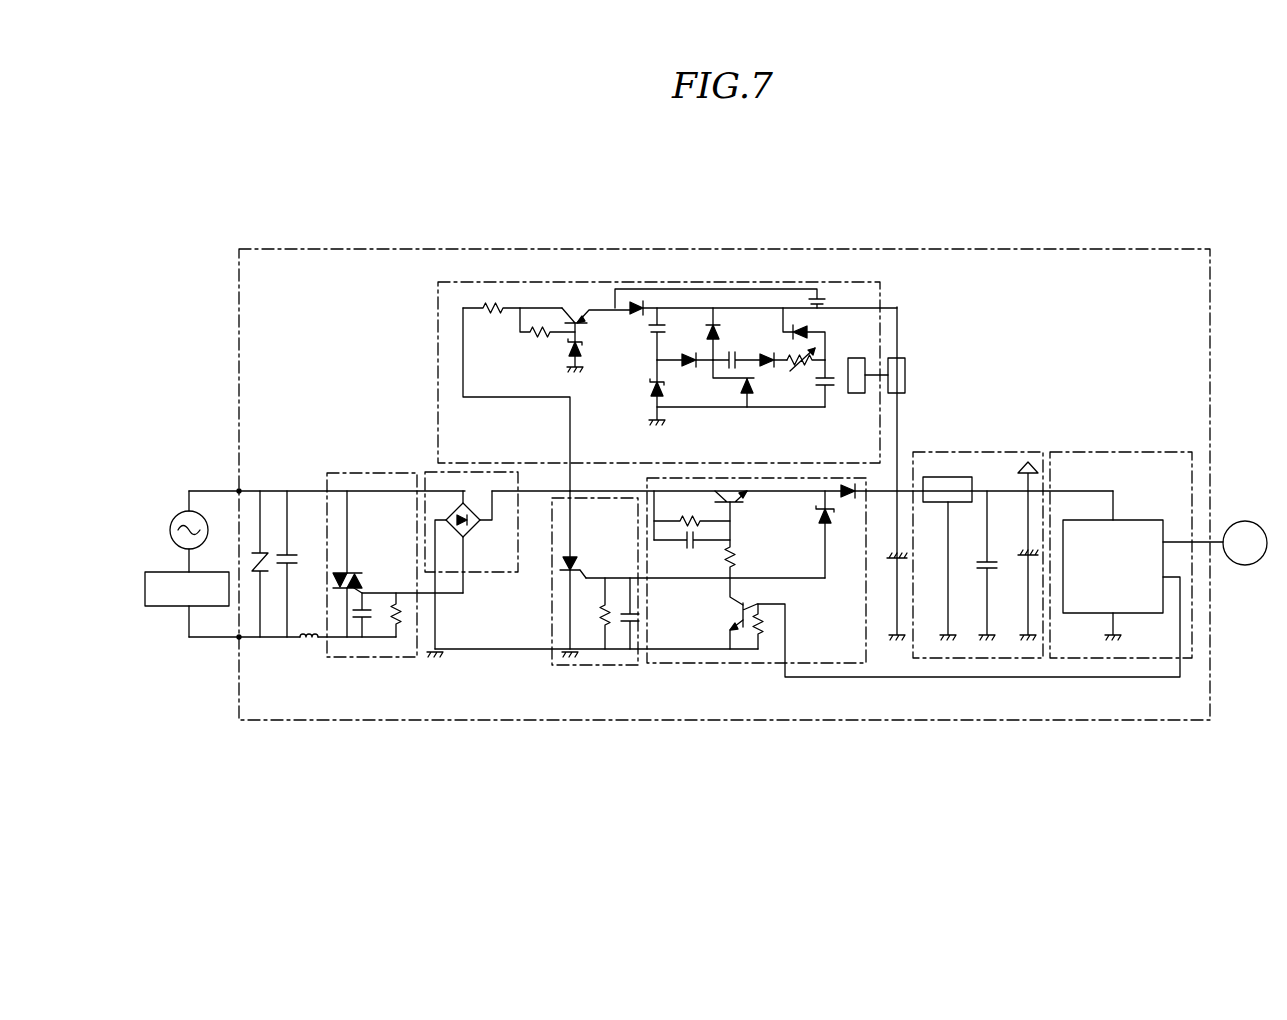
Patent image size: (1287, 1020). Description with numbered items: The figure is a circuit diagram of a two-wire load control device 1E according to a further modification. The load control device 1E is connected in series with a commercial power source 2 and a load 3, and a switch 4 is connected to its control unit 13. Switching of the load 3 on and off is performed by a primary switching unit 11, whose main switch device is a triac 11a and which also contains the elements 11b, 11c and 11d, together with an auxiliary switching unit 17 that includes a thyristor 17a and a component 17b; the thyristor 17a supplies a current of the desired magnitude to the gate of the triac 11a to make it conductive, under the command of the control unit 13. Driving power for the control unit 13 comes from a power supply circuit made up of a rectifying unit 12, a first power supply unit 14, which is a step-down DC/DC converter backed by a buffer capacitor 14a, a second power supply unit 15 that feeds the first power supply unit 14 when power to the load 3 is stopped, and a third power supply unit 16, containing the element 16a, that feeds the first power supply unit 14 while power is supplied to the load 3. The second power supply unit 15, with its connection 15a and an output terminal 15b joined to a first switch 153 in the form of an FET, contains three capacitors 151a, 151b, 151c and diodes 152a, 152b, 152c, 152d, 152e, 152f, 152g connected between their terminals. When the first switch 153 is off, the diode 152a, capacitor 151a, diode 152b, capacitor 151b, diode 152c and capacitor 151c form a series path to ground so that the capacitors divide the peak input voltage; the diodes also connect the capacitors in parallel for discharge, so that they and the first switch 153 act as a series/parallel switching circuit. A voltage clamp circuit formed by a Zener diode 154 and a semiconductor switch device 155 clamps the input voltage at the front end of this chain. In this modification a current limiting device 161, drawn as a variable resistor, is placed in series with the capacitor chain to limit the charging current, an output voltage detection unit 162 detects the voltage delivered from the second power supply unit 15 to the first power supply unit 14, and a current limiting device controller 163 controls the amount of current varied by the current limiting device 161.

The two-wire load control device 1E is at (643, 146).
The commercial power source 2 is at (175, 517).
The load 3 is at (162, 572).
The switch 4 is at (1245, 565).
The primary switching unit 11 is at (405, 472).
The triac 11a is at (338, 572).
The triac 11b is at (347, 600).
The capacitor 11c is at (366, 625).
The resistor 11d is at (398, 630).
The rectifying unit 12 is at (483, 572).
The control unit 13 is at (1150, 520).
The first power supply unit 14 is at (980, 452).
The buffer capacitor 14a is at (899, 640).
The second power supply unit 15 is at (855, 282).
The output line 15a is at (570, 490).
The output terminal 15b is at (898, 555).
The third power supply unit 16 is at (845, 663).
The zener diode 16a is at (822, 525).
The auxiliary switching unit 17 is at (578, 665).
The thyristor 17a is at (567, 572).
The capacitor 17b is at (632, 625).
The capacitor 151a is at (660, 322).
The capacitor 151b is at (728, 366).
The capacitor 151c is at (831, 384).
The diode 152a is at (635, 303).
The diode 152b is at (686, 363).
The diode 152c is at (766, 355).
The diode 152d is at (712, 322).
The diode 152e is at (654, 386).
The diode 152f is at (746, 395).
The diode 152g is at (797, 328).
The first switch 153 is at (816, 288).
The Zener diode 154 is at (570, 346).
The semiconductor switch device 155 is at (576, 305).
The current limiting device 161 is at (802, 374).
The output voltage detection unit 162 is at (900, 358).
The current limiting device controller 163 is at (855, 358).